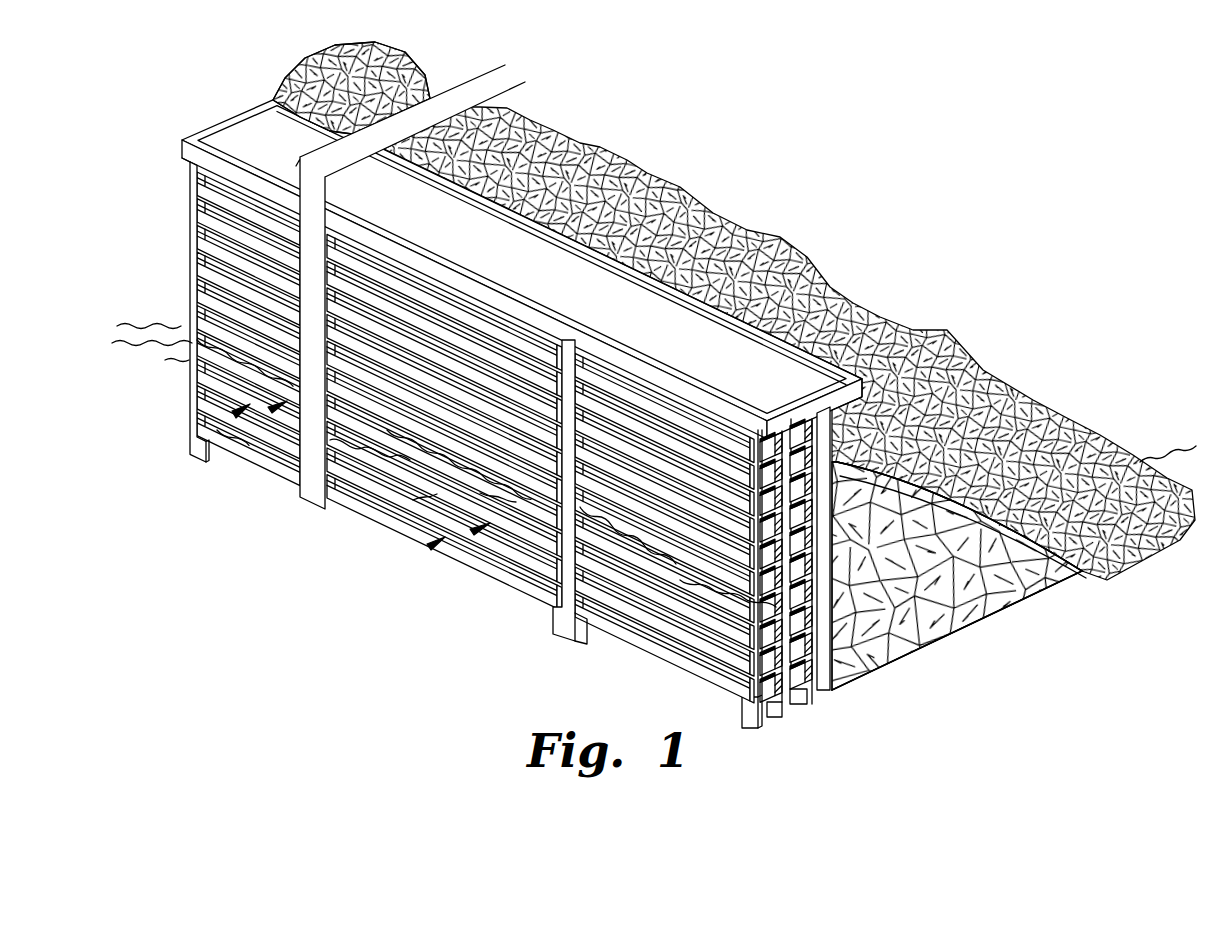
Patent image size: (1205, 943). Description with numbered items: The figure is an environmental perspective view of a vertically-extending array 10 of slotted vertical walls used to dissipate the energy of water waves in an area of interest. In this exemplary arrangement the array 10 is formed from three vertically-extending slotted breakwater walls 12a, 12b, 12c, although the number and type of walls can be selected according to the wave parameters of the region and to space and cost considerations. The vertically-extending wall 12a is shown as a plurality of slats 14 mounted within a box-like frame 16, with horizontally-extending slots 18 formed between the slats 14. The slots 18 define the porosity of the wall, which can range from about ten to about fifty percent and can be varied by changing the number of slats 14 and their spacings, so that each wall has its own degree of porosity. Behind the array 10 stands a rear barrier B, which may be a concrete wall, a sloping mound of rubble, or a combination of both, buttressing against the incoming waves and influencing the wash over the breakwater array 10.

The array of slotted vertical walls 10 is at (654, 401).
The slats 14 is at (190, 228).
The box-like frame 16 is at (573, 638).
The horizontally-extending slots 18 is at (270, 410).
The vertically-extending slotted breakwater wall 12a is at (762, 728).
The vertically-extending slotted breakwater wall 12b is at (785, 717).
The vertically-extending slotted breakwater wall 12c is at (809, 703).
The rear barrier B is at (1018, 624).